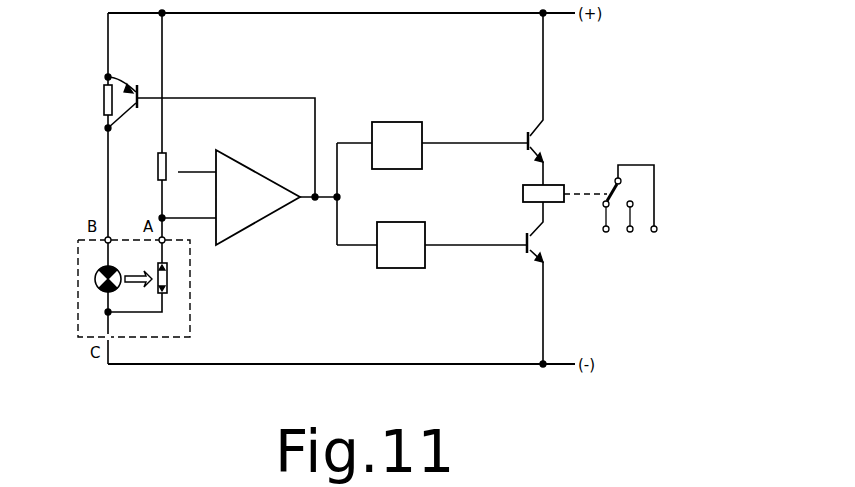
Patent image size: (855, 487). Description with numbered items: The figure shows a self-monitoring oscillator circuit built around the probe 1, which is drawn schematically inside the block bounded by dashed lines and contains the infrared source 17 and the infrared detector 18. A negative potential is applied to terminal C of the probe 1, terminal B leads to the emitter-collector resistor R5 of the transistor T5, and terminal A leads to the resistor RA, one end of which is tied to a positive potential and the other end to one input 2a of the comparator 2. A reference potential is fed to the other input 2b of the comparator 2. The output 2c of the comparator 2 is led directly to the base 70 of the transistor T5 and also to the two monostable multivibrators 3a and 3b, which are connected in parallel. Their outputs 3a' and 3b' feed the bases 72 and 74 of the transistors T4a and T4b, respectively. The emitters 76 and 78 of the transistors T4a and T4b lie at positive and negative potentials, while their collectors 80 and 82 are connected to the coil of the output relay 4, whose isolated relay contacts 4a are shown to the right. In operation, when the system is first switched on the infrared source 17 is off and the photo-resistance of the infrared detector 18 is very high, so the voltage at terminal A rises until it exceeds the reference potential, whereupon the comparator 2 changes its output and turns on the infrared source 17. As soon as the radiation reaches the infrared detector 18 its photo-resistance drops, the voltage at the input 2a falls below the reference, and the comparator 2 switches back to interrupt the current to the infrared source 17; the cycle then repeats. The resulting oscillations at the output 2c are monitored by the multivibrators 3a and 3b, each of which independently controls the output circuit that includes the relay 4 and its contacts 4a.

The probe 1 is at (136, 265).
The comparator 2 is at (238, 150).
The comparator input 2a is at (203, 220).
The comparator reference input 2b is at (196, 176).
The comparator output 2c is at (303, 200).
The monostable multivibrator 3a is at (379, 131).
The multivibrator output 3a' is at (475, 128).
The monostable multivibrator 3b is at (381, 261).
The multivibrator output 3b' is at (476, 260).
The output relay 4 is at (548, 185).
The relay contacts 4a is at (626, 193).
The infrared source 17 is at (94, 283).
The infrared detector 18 is at (170, 281).
The base of transistor T5 70 is at (140, 106).
The base of transistor T4a 72 is at (524, 147).
The base of transistor T4b 74 is at (524, 241).
The emitter of transistor T4a 76 is at (536, 124).
The emitter of transistor T4b 78 is at (540, 256).
The collector of transistor T4a 80 is at (540, 155).
The collector of transistor T4b 82 is at (534, 229).
The transistor T5 is at (125, 96).
The transistor T4a is at (521, 99).
The transistor T4b is at (521, 283).
The emitter-collector resistor R5 is at (92, 100).
The resistor RA is at (147, 166).